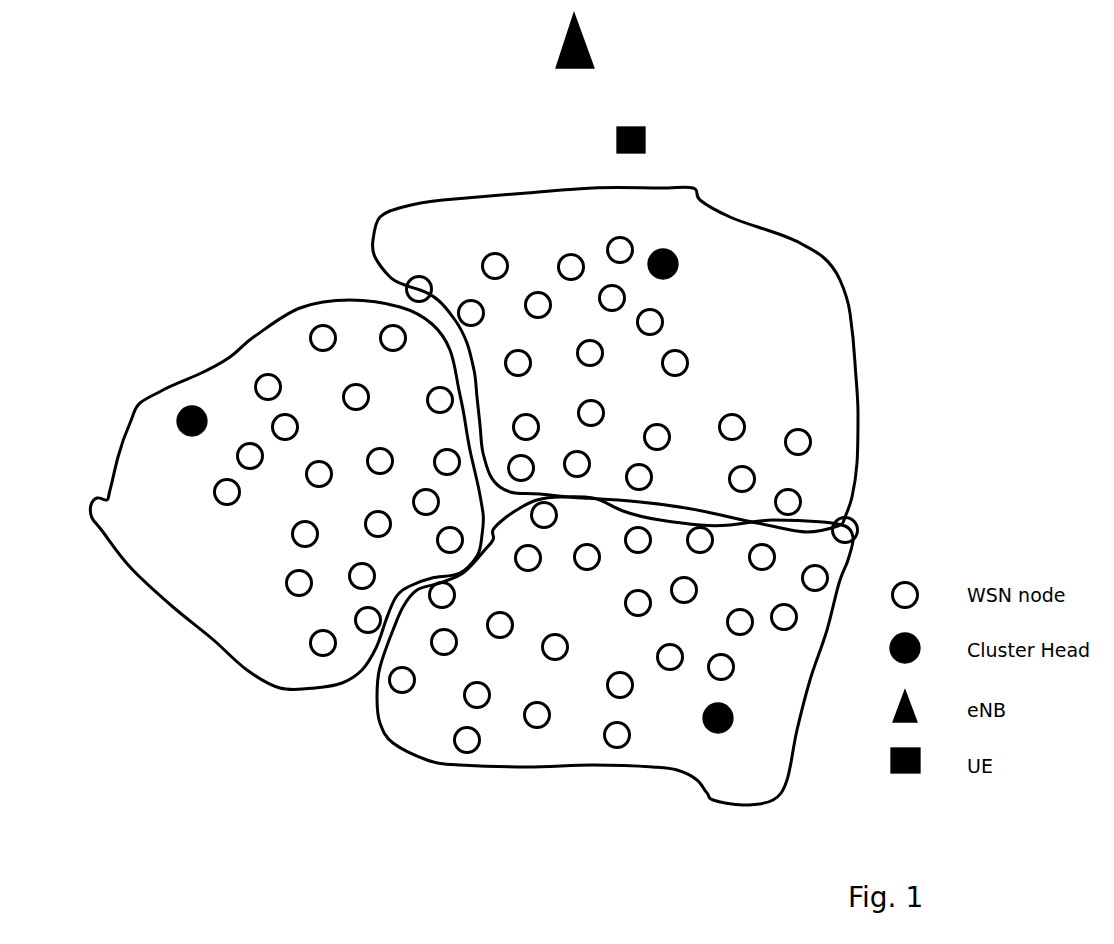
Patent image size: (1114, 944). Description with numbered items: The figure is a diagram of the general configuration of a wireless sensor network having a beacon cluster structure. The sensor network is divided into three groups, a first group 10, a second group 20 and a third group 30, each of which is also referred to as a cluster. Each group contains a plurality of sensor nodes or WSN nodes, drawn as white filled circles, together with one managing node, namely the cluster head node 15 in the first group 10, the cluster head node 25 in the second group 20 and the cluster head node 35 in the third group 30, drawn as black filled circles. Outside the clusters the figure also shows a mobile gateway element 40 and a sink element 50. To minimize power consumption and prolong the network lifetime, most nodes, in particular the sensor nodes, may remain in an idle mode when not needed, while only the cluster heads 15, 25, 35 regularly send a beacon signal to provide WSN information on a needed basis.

The Group_1 10 is at (223, 383).
The cluster head node 15 is at (222, 421).
The Group_2 20 is at (530, 193).
The cluster head node 25 is at (712, 262).
The Group_3 30 is at (488, 763).
The cluster head node 35 is at (745, 730).
The mobile gateway element 40 is at (680, 130).
The sink element 50 is at (602, 37).